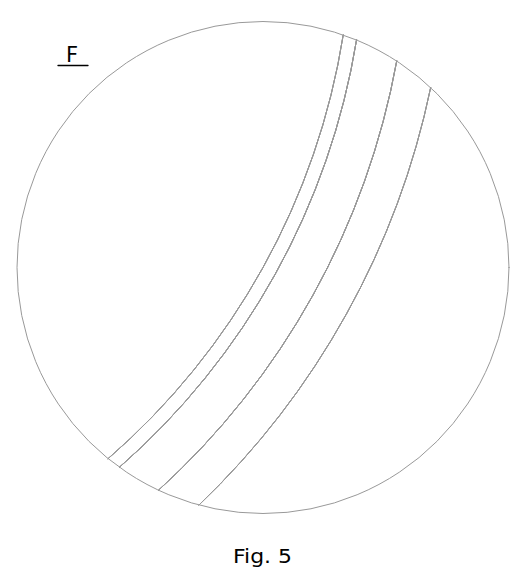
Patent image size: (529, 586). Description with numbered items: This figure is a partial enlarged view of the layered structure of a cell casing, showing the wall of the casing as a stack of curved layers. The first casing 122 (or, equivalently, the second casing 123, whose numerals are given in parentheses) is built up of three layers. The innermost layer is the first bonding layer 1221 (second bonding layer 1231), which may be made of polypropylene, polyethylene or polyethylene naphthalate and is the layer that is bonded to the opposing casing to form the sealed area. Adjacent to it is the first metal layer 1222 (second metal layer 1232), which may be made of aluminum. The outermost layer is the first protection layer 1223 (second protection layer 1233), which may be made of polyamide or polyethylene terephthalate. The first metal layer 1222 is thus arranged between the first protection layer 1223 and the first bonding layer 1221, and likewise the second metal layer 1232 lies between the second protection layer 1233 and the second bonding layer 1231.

The first casing 122 is at (141, 162).
The second casing 123 is at (269, 270).
The first bonding layer 1221 is at (279, 258).
The second bonding layer 1231 is at (232, 251).
The first metal layer 1222 is at (316, 238).
The second metal layer 1232 is at (257, 265).
The first protection layer 1223 is at (304, 352).
The second protection layer 1233 is at (295, 283).